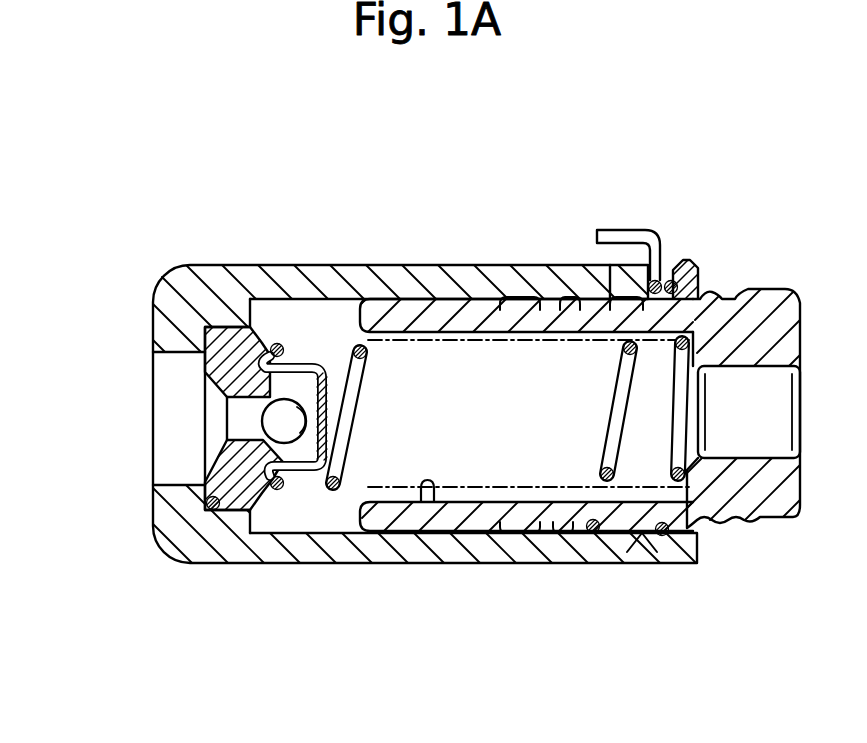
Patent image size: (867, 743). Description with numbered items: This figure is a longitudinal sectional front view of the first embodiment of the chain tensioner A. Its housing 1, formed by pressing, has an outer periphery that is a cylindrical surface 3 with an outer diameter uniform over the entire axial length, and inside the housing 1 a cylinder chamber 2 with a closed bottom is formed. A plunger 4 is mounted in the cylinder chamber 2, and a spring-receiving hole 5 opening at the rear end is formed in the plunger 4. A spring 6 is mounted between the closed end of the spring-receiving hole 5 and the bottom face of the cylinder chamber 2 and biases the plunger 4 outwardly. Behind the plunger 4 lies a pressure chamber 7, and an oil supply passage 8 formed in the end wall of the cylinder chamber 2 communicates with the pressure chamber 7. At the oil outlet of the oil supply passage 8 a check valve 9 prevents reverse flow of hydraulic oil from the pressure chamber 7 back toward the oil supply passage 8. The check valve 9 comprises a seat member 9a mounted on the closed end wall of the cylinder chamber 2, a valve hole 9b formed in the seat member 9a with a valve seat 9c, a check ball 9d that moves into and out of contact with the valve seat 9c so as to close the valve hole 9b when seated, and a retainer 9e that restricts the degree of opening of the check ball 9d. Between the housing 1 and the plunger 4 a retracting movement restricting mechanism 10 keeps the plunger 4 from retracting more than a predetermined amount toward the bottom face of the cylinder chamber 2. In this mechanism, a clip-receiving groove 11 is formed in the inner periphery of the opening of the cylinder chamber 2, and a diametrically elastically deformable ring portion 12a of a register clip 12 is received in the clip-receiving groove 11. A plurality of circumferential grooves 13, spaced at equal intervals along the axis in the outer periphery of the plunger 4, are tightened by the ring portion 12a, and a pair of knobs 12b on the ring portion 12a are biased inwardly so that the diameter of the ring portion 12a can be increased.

The housing 1 is at (517, 264).
The cylinder chamber 2 is at (588, 530).
The cylindrical surface 3 is at (563, 264).
The plunger 4 is at (476, 535).
The spring-receiving hole 5 is at (428, 495).
The spring 6 is at (690, 480).
The pressure chamber 7 is at (312, 517).
The oil supply passage 8 is at (190, 412).
The check valve 9 is at (216, 303).
The seat member 9a is at (225, 350).
The valve hole 9b is at (247, 417).
The valve seat 9c is at (273, 346).
The check ball 9d is at (322, 362).
The retainer 9e is at (345, 400).
The retracting movement restricting mechanism 10 is at (672, 265).
The clip-receiving groove 11 is at (632, 528).
The register clip 12 is at (700, 267).
The ring portion 12a is at (665, 532).
The knobs 12b is at (623, 237).
The circumferential grooves 13 is at (541, 531).
The chain tensioner A is at (452, 263).